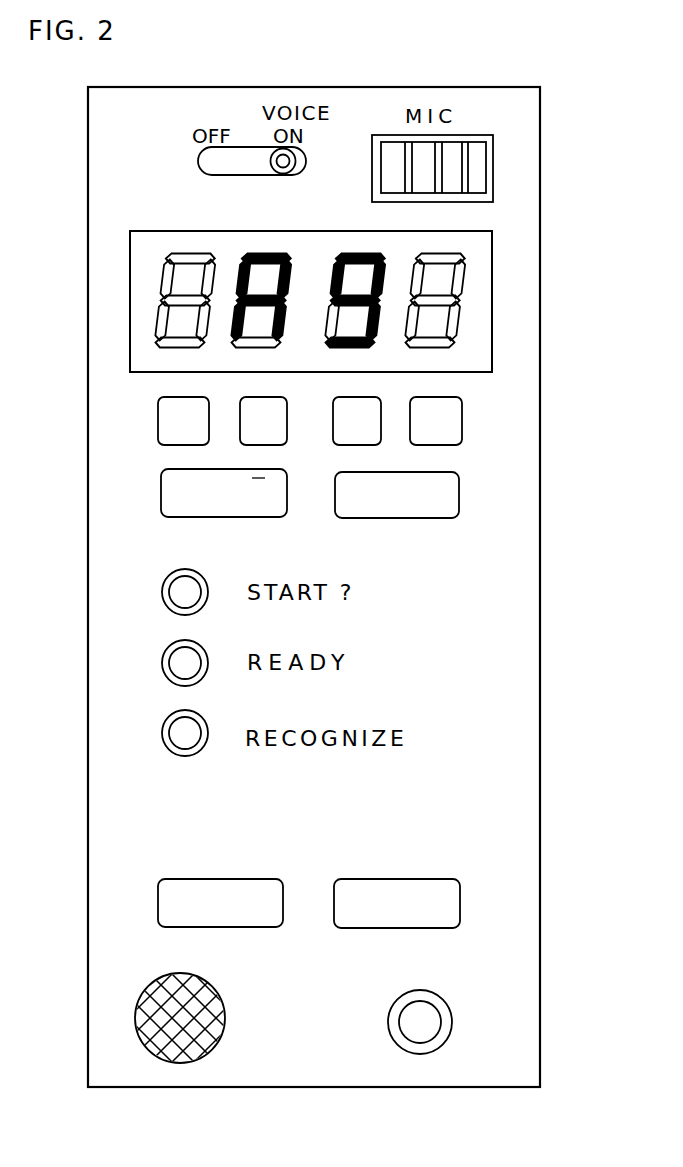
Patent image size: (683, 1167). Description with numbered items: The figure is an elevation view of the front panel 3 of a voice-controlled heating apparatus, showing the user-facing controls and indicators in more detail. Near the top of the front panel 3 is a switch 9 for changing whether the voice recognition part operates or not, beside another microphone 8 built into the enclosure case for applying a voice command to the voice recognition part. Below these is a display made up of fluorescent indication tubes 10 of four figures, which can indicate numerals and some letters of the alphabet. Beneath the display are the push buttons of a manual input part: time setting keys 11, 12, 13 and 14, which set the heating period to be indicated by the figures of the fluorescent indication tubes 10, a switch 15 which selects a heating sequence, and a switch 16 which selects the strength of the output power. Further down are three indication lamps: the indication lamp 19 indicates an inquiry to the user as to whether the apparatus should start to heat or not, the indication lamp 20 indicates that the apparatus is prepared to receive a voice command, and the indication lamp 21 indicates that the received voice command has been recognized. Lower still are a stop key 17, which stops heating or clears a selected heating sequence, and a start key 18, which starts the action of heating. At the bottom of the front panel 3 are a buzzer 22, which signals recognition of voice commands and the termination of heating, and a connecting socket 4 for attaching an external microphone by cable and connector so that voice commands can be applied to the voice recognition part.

The front panel 3 is at (529, 652).
The connecting socket 4 is at (436, 1028).
The microphone 8 is at (478, 149).
The switch 9 is at (258, 177).
The fluorescent indication tubes 10 is at (491, 253).
The time setting key 11 is at (163, 443).
The time setting key 12 is at (245, 443).
The time setting key 13 is at (335, 444).
The time setting key 14 is at (415, 444).
The switch 15 is at (200, 517).
The switch 16 is at (353, 518).
The stop key 17 is at (237, 878).
The start key 18 is at (408, 878).
The indication lamp 19 is at (162, 592).
The indication lamp 20 is at (162, 664).
The indication lamp 21 is at (162, 738).
The buzzer 22 is at (225, 1007).